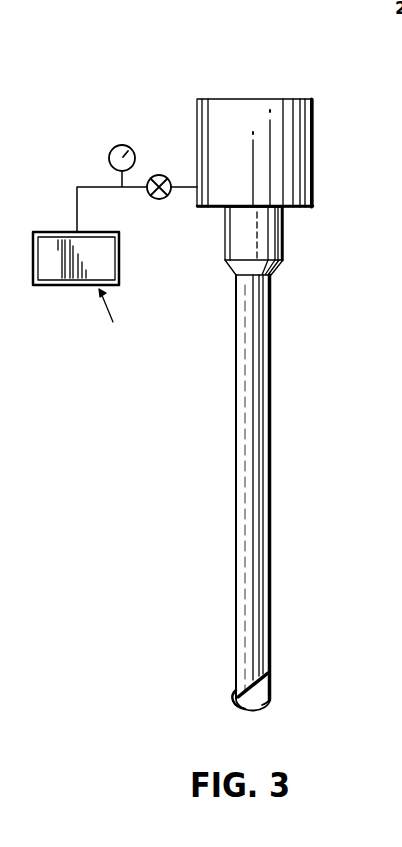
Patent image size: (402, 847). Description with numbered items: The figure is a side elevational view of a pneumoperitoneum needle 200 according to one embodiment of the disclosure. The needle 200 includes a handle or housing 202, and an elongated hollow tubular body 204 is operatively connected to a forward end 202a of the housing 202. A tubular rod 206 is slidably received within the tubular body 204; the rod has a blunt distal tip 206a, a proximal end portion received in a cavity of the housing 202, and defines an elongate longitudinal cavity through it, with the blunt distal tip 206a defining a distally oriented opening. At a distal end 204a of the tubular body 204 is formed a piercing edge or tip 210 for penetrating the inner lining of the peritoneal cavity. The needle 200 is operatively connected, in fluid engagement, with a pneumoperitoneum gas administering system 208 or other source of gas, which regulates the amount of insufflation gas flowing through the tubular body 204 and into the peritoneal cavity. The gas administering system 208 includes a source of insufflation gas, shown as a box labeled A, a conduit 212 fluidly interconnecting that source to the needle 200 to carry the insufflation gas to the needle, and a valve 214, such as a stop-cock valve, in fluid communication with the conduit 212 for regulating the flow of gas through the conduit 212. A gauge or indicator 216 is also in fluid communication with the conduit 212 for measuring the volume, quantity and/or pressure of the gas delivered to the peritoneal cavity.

The pneumoperitoneum needle 200 is at (268, 79).
The handle or housing 202 is at (323, 136).
The forward end of housing 202a is at (297, 208).
The elongated hollow tubular body 204 is at (275, 311).
The distal end of tubular body 204a is at (245, 673).
The tubular rod 206 is at (272, 689).
The blunt distal tip 206a is at (260, 706).
The pneumoperitoneum gas administering system 208 is at (73, 163).
The piercing edge or tip 210 is at (235, 705).
The conduit 212 is at (93, 187).
The valve 214 is at (167, 175).
The gauge or indicator 216 is at (128, 146).